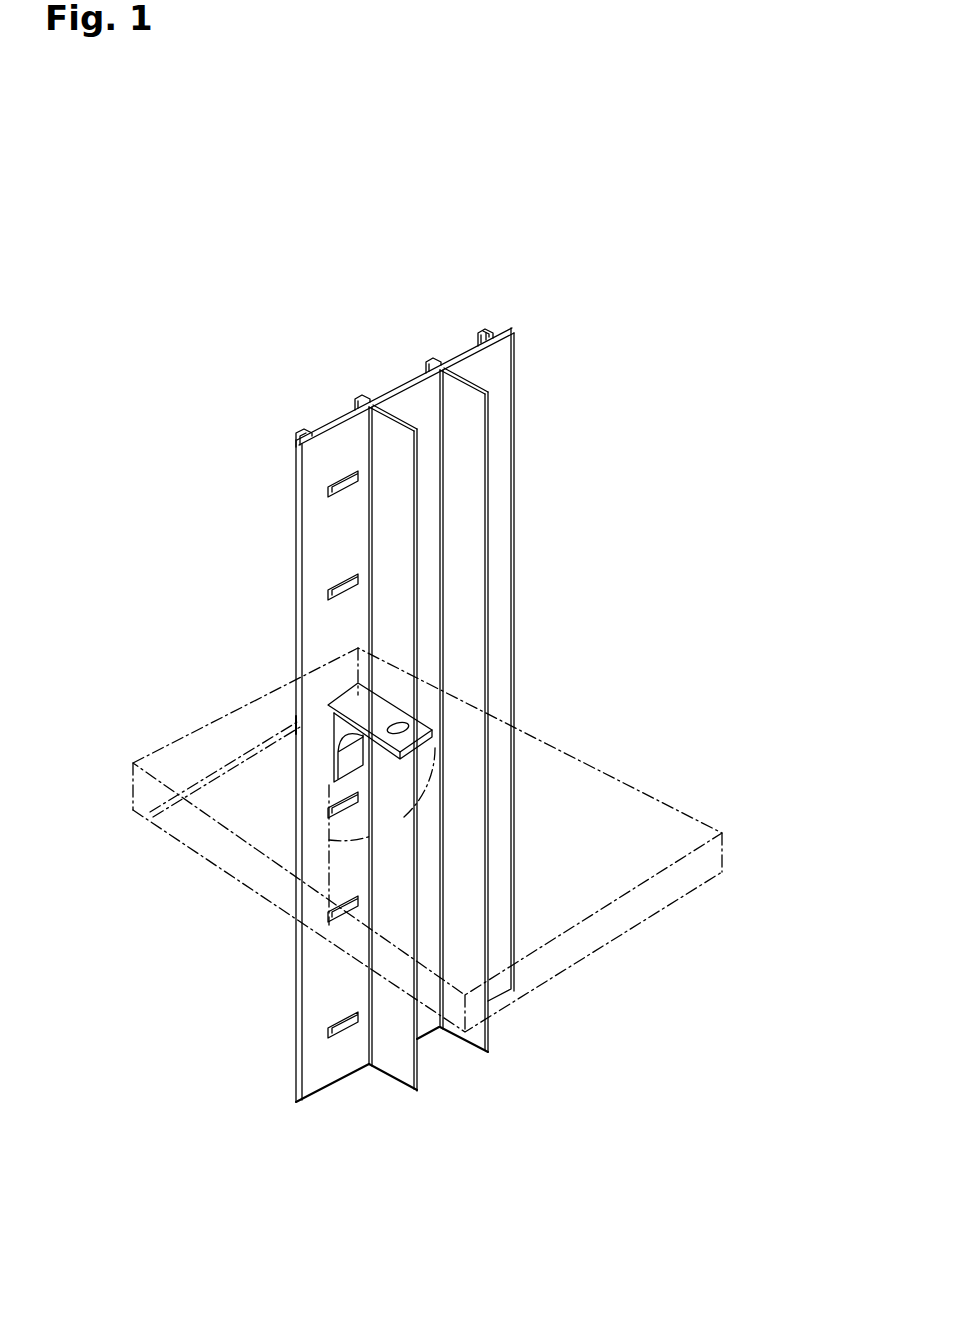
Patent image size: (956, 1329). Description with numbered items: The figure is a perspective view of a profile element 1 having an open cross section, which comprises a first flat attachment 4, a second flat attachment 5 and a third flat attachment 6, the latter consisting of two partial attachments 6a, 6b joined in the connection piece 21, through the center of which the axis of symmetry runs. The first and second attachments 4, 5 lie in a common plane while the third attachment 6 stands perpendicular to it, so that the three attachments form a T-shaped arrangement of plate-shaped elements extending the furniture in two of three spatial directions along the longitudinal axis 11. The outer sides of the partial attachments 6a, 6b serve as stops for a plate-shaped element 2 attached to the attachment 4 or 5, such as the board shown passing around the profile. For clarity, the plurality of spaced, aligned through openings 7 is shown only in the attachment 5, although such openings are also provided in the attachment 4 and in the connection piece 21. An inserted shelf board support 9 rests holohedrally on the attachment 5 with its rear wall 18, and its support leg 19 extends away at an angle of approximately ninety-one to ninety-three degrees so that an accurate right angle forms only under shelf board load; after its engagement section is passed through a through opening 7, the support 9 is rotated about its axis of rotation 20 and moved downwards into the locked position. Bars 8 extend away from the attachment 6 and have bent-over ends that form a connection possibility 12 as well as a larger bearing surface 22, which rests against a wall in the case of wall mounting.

The profile element 1 is at (243, 1040).
The plate-shaped element 2 is at (578, 842).
The first flat attachment 4 is at (501, 368).
The second flat attachment 5 is at (337, 448).
The third flat attachment 6 is at (426, 393).
The partial attachment 6a is at (473, 460).
The partial attachment 6b is at (390, 570).
The through openings 7 is at (335, 590).
The bar 8 is at (309, 436).
The shelf board support 9 is at (340, 723).
The longitudinal axis 11 is at (438, 1038).
The connection possibility 12 is at (492, 327).
The rear wall 18 is at (345, 765).
The support leg 19 is at (363, 703).
The axis of rotation 20 is at (300, 725).
The connection piece 21 is at (402, 393).
The bearing surface 22 is at (483, 326).